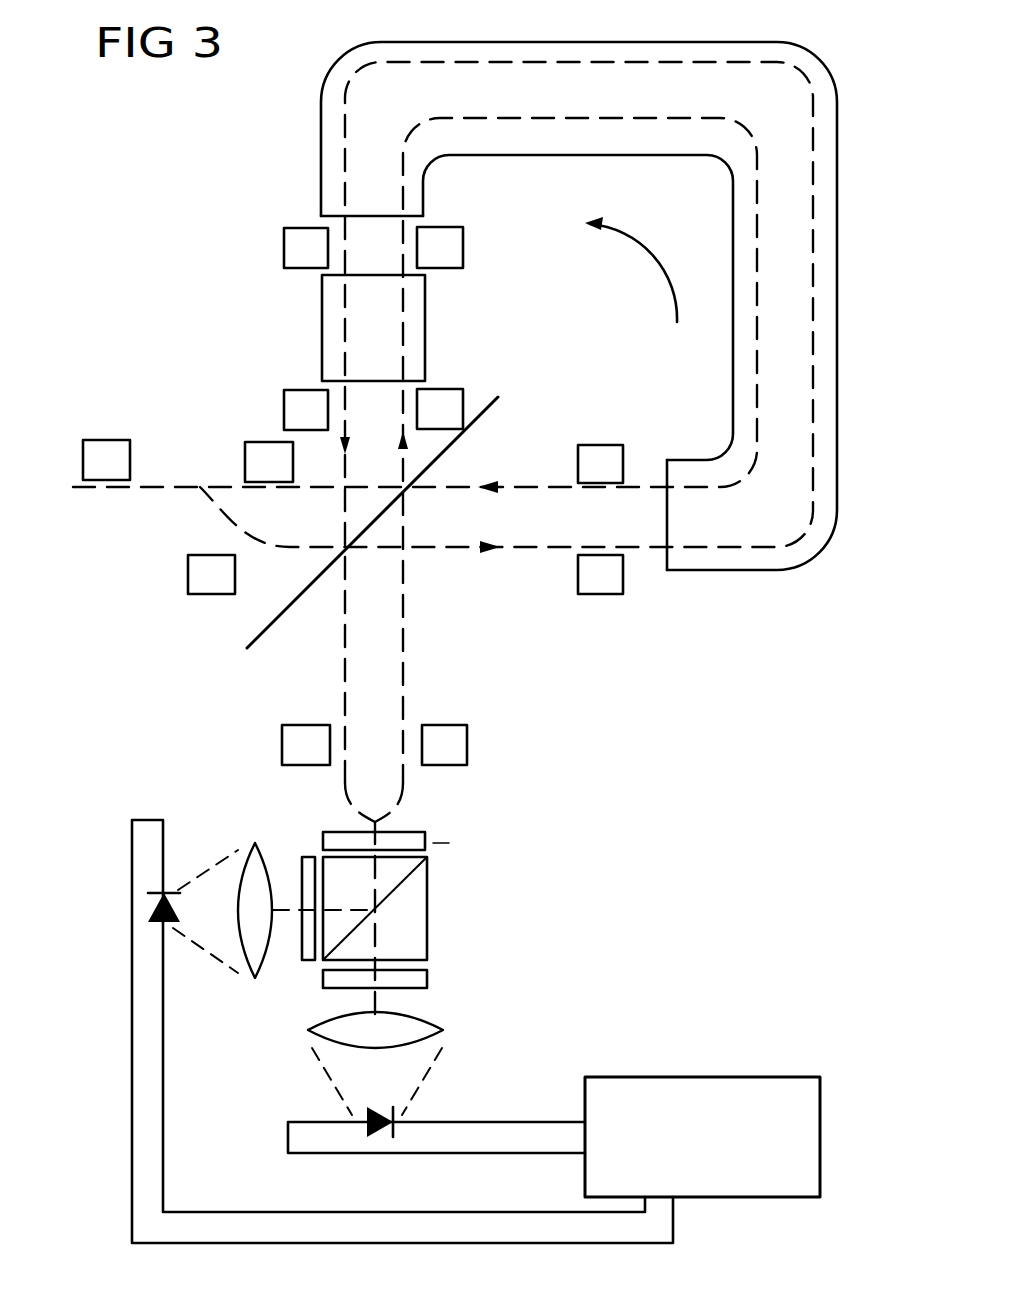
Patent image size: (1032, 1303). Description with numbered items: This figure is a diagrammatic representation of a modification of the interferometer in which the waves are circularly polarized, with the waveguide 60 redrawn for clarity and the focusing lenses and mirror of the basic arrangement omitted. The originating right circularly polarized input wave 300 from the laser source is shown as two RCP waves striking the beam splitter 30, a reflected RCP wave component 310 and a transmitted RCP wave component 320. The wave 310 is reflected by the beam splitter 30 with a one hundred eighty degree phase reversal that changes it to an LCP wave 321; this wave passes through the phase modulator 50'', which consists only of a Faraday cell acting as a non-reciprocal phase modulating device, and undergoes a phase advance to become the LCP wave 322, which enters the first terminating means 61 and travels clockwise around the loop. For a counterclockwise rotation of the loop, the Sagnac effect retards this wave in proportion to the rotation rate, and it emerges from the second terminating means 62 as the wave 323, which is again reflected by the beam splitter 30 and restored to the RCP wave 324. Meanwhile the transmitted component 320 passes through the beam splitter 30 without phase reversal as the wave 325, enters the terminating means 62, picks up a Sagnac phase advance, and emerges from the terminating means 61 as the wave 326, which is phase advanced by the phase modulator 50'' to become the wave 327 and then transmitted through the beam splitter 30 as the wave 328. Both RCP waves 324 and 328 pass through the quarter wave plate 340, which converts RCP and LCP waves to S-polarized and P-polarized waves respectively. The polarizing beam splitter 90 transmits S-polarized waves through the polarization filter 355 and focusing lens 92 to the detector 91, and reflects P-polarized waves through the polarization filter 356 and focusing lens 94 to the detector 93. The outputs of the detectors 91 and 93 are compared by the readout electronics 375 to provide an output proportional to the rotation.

The waveguide 60 is at (563, 42).
The first terminating means 61 is at (321, 219).
The second terminating means 62 is at (666, 561).
The phase modulator 50'' is at (346, 328).
The beam splitter 30 is at (500, 398).
The RCP polarized input wave 300 is at (120, 440).
The reflected RCP wave component 310 is at (245, 452).
The transmitted RCP wave component 320 is at (188, 561).
The LCP wave 321 is at (442, 390).
The LCP wave 322 is at (463, 232).
The LCP wave 323 is at (623, 461).
The RCP wave 324 is at (467, 740).
The RCP wave 325 is at (578, 580).
The RCP wave 326 is at (284, 250).
The RCP wave 327 is at (284, 393).
The RCP wave 328 is at (308, 725).
The quarter wave plate 340 is at (405, 832).
The polarizing beam splitter 90 is at (427, 857).
The polarization filter 355 is at (427, 978).
The polarization filter 356 is at (316, 857).
The focusing lens 92 is at (440, 1025).
The focusing lens 94 is at (254, 845).
The detector 93 is at (198, 876).
The detector 91 is at (468, 1112).
The readout electronics 375 is at (645, 1077).